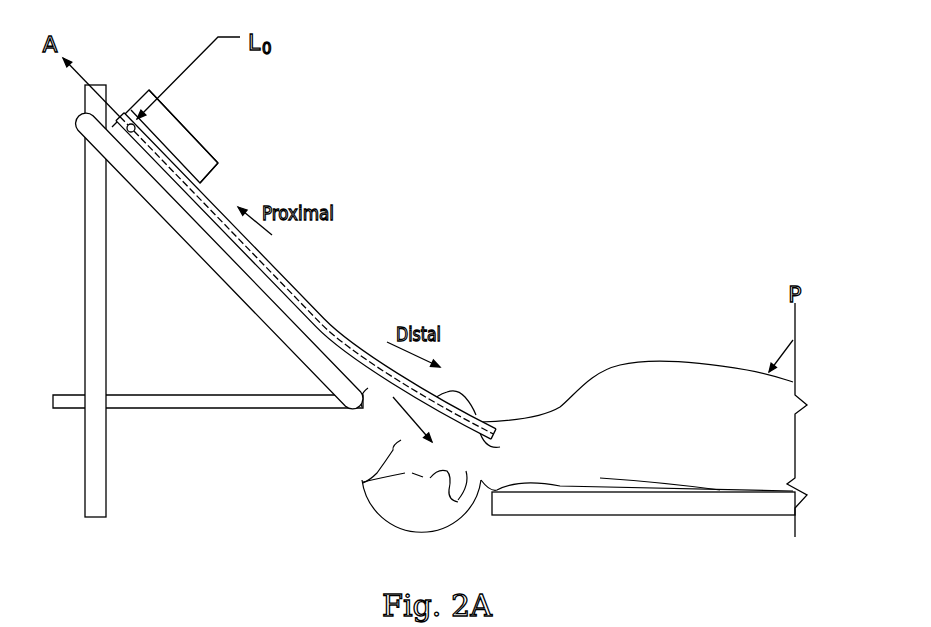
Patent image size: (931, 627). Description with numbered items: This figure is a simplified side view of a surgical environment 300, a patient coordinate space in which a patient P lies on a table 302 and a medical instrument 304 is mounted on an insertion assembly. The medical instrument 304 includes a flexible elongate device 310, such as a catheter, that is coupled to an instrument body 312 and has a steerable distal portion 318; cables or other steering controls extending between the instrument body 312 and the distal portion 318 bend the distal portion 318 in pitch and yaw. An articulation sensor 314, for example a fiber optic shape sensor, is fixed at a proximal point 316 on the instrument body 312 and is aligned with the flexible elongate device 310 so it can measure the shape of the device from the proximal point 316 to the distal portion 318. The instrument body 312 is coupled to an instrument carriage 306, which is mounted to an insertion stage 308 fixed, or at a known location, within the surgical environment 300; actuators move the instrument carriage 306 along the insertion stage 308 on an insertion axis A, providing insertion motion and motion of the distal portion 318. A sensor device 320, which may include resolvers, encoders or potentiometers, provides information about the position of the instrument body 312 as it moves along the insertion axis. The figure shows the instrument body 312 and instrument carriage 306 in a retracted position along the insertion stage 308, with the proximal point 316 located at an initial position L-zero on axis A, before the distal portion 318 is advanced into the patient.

The surgical environment 300 is at (616, 155).
The operating table 302 is at (643, 516).
The medical instrument 304 is at (175, 115).
The instrument carriage 306 is at (203, 182).
The insertion stage 308 is at (218, 271).
The flexible elongate device 310 is at (336, 330).
The instrument body 312 is at (207, 151).
The articulation sensor 314 is at (283, 272).
The proximal point 316 is at (131, 124).
The distal portion 318 is at (499, 440).
The sensor device 320 is at (139, 164).